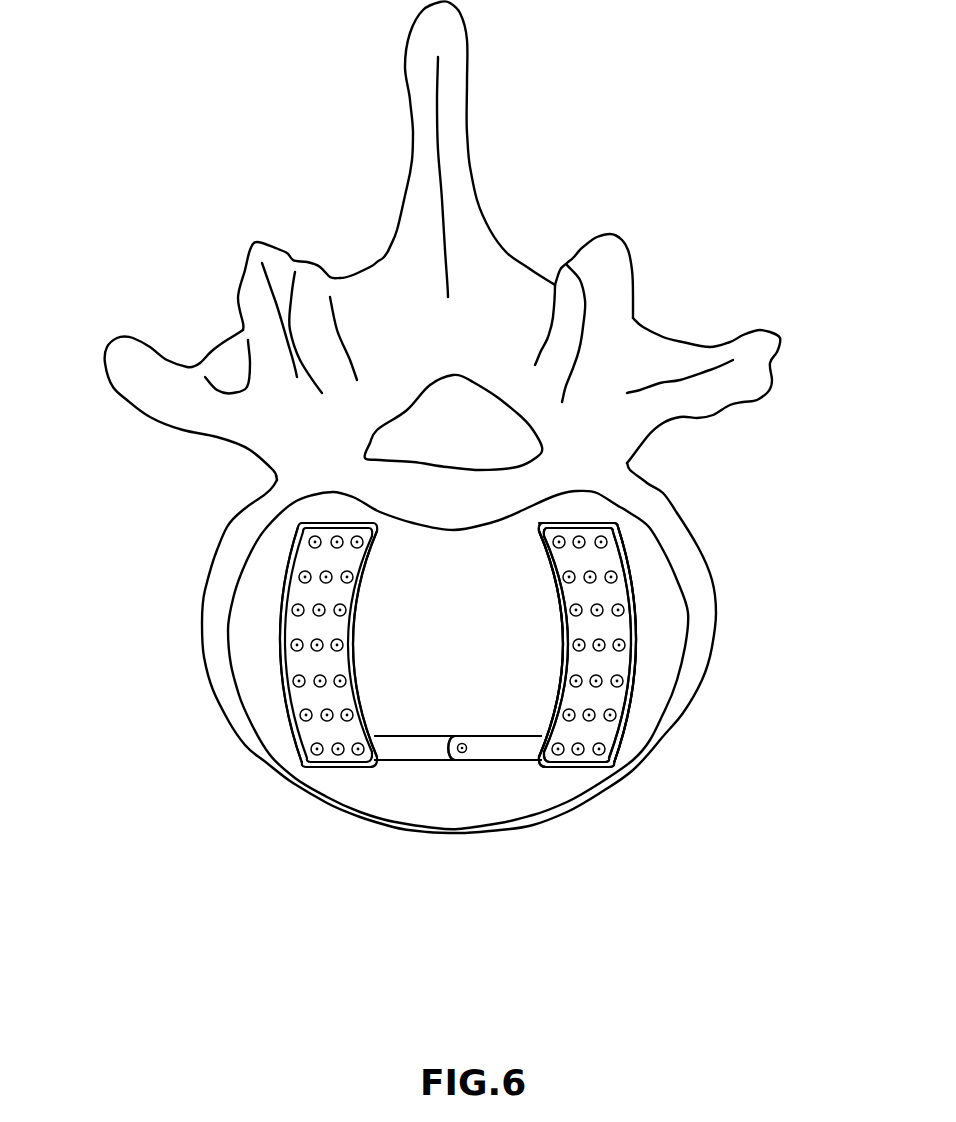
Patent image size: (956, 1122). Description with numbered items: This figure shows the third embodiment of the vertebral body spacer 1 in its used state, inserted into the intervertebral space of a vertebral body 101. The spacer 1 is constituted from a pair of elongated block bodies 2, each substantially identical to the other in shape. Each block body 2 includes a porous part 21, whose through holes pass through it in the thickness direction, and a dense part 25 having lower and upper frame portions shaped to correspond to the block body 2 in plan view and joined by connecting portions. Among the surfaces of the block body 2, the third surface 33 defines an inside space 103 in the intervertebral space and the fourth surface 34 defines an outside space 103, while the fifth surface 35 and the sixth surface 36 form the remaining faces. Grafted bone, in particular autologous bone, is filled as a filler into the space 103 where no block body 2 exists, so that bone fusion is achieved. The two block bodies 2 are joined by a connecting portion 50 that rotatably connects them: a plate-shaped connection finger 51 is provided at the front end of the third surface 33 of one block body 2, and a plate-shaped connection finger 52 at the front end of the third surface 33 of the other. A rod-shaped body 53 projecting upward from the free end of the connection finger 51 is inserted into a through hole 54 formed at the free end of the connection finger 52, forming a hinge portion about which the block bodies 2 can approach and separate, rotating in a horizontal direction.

The vertebral body spacer 1 is at (636, 569).
The block body 2 is at (637, 638).
The porous part 21 is at (323, 737).
The dense part 25 is at (290, 727).
The third surface 33 is at (353, 647).
The fourth surface 34 is at (277, 647).
The fifth surface 35 is at (333, 520).
The sixth surface 36 is at (347, 763).
The connecting portion 50 is at (474, 866).
The connection finger 51 is at (420, 750).
The connection finger 52 is at (508, 748).
The rod-shaped body 53 is at (465, 752).
The through hole 54 is at (467, 747).
The vertebral body 101 is at (222, 578).
The space 103 is at (343, 517).